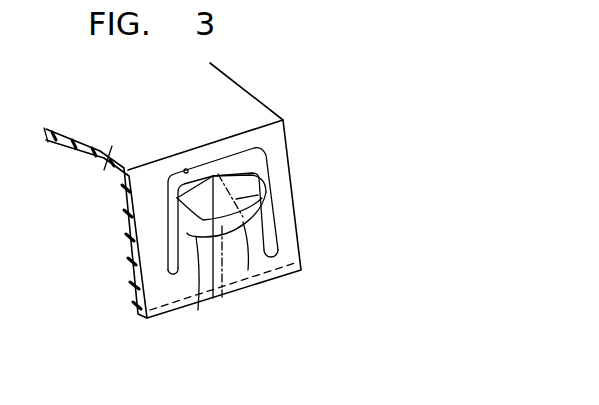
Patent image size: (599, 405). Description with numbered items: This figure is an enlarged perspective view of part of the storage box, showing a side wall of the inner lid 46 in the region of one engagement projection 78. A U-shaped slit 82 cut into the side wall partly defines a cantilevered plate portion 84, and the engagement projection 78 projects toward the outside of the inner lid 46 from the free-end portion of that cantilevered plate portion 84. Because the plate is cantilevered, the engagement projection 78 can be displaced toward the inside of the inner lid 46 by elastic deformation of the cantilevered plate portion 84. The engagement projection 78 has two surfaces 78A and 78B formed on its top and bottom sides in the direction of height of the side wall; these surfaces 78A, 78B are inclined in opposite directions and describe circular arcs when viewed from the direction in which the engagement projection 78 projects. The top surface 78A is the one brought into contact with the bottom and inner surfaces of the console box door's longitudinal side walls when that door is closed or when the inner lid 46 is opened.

The inner lid 46 is at (110, 165).
The engagement projection 78 is at (272, 189).
The top surface of engagement projection 78A is at (233, 184).
The bottom surface of engagement projection 78B is at (240, 284).
The U-shaped slit 82 is at (187, 170).
The cantilevered plate portion 84 is at (221, 254).